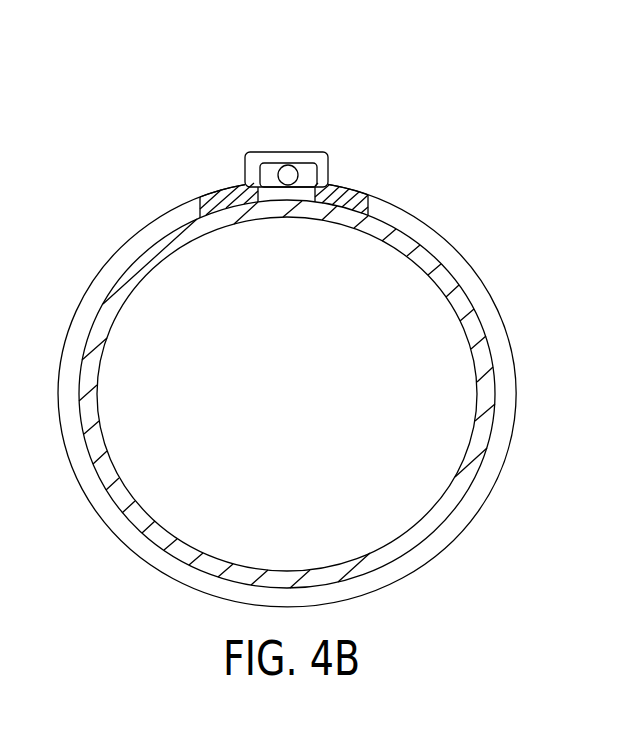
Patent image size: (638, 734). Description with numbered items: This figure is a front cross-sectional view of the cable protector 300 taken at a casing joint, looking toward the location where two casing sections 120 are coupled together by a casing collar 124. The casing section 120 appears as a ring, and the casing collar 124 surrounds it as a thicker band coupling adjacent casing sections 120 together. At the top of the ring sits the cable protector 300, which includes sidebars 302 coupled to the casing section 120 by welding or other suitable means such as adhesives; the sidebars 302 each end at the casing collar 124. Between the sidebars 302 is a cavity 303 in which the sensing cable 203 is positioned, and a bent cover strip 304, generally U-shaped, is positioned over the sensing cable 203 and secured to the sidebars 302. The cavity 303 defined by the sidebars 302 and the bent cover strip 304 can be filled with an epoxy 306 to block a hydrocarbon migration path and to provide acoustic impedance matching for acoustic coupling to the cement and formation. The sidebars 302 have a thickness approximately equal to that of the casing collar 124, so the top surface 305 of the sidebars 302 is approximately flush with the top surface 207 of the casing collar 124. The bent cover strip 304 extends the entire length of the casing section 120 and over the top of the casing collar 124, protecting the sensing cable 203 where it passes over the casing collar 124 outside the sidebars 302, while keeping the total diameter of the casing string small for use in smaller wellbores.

The cable protector 300 is at (341, 88).
The casing section 120 is at (473, 328).
The casing collar 124 is at (468, 288).
The top surface of the casing collar 207 is at (437, 233).
The sidebar 302 is at (215, 195).
The cavity 303 is at (272, 145).
The bent cover strip 304 is at (317, 152).
The top surface of the sidebar 305 is at (242, 183).
The epoxy 306 is at (268, 156).
The sensing cable 203 is at (305, 160).